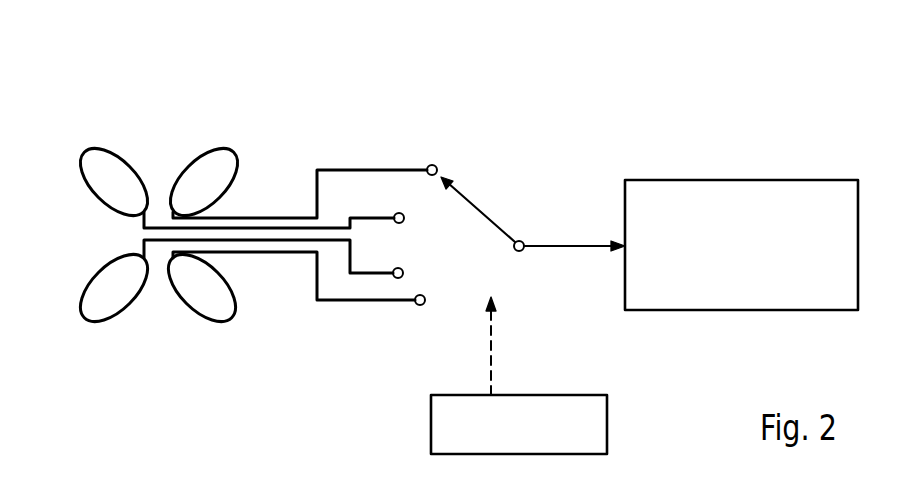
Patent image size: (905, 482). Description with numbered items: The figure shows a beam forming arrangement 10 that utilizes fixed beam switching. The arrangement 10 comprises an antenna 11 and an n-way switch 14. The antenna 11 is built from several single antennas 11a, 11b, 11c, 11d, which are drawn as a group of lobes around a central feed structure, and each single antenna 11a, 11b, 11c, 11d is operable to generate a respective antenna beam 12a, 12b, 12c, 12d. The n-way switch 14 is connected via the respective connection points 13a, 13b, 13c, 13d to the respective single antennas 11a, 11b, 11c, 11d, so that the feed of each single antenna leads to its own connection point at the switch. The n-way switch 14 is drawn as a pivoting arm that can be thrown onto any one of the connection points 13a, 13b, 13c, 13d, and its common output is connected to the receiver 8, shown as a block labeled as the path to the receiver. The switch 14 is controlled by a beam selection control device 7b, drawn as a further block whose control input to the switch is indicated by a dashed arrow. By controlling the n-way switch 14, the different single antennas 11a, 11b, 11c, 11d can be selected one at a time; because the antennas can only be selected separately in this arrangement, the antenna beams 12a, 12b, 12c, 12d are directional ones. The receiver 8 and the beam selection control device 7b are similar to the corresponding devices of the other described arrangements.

The beam forming arrangement 10 is at (605, 103).
The antenna 11 is at (145, 367).
The single antenna 11a is at (168, 212).
The single antenna 11b is at (168, 258).
The single antenna 11c is at (143, 250).
The single antenna 11d is at (143, 223).
The antenna beam 12a is at (238, 167).
The antenna beam 12b is at (237, 305).
The antenna beam 12c is at (83, 300).
The antenna beam 12d is at (82, 171).
The connection point 13a is at (432, 164).
The connection point 13b is at (420, 306).
The connection point 13c is at (403, 268).
The connection point 13d is at (395, 213).
The n-way switch 14 is at (469, 199).
The receiver 8 is at (737, 179).
The beam selection control device 7b is at (608, 418).